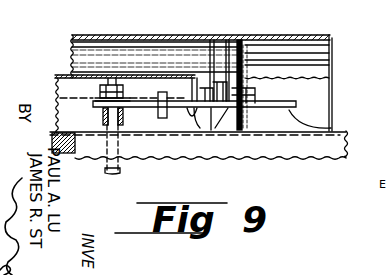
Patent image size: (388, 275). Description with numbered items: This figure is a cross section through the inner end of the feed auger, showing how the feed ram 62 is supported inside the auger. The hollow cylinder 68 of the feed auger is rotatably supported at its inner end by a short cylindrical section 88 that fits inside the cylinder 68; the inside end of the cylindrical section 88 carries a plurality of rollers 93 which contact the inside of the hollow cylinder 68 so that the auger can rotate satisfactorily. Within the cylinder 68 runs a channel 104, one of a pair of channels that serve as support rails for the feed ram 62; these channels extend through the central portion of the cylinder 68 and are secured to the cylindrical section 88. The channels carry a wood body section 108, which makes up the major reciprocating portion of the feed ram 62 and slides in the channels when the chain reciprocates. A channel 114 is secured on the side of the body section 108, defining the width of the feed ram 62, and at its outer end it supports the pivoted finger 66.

The rollers 93 is at (219, 76).
The hollow cylinder 68 is at (72, 47).
The channel 114 is at (67, 90).
The short cylindrical section 88 is at (327, 67).
The finger 66 is at (334, 120).
The wood body section 108 is at (64, 157).
The feed ram 62 is at (172, 164).
The channel 104 is at (302, 152).